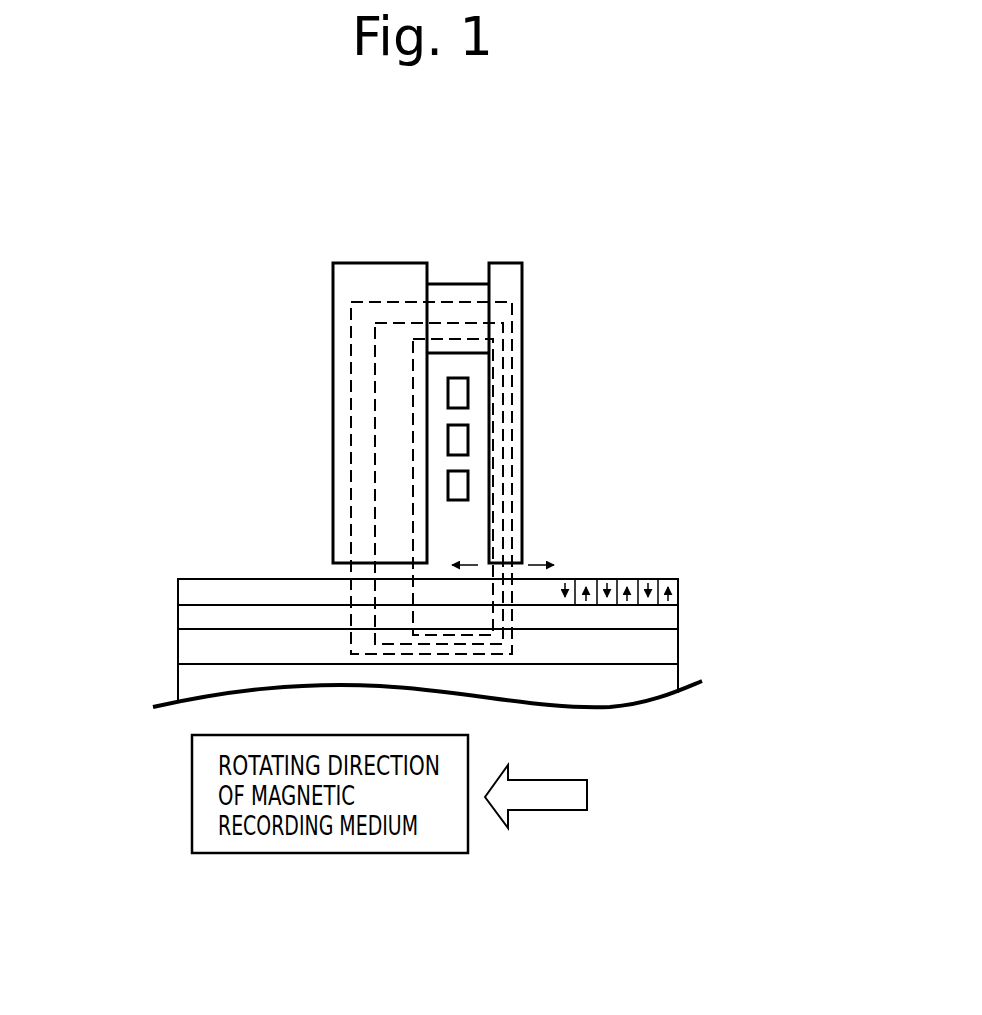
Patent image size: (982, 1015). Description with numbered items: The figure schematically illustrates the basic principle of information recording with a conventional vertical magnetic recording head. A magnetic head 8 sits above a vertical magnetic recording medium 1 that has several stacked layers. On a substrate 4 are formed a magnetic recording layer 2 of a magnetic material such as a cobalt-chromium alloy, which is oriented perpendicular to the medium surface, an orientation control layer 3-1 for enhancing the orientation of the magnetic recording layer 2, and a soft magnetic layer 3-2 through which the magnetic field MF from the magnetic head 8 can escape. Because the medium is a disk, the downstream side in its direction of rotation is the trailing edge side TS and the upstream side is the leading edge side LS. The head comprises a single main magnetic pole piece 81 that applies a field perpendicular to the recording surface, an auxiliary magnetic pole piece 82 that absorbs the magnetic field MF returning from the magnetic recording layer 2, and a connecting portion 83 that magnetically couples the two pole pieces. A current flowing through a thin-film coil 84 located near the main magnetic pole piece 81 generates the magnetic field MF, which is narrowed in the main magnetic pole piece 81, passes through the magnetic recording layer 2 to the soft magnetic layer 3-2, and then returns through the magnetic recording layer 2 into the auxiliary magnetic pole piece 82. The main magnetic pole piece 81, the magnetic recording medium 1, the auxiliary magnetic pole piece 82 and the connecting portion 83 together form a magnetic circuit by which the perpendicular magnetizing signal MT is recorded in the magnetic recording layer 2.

The vertical magnetic recording medium 1 is at (437, 614).
The magnetic recording layer 2 is at (213, 592).
The orientation control layer 3-1 is at (663, 617).
The soft magnetic layer 3-2 is at (663, 647).
The substrate 4 is at (663, 680).
The magnetic head 8 is at (400, 376).
The main magnetic pole piece 81 is at (507, 280).
The auxiliary magnetic pole piece 82 is at (332, 282).
The connecting portion 83 is at (462, 290).
The thin-film coil 84 is at (458, 392).
The magnetic field MF is at (347, 595).
The trailing edge side TS is at (470, 560).
The leading edge side LS is at (533, 562).
The magnetizing signal MT is at (674, 574).